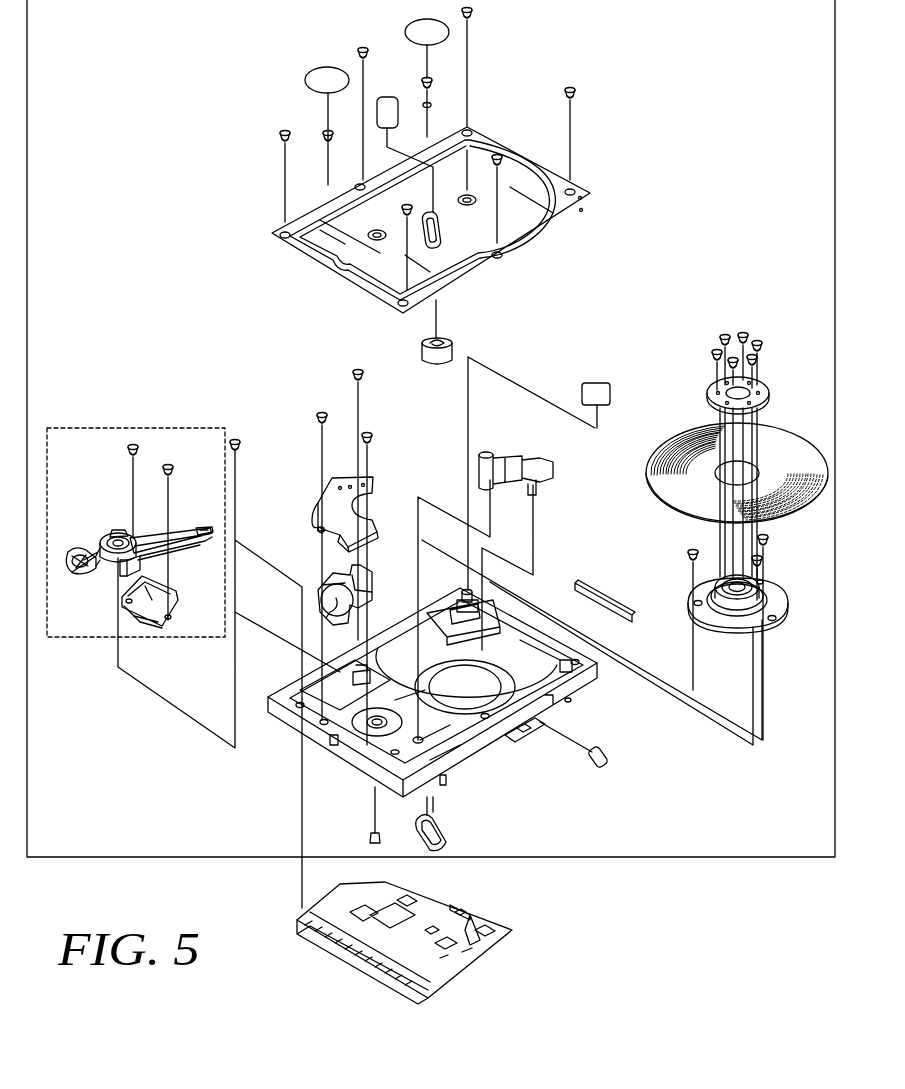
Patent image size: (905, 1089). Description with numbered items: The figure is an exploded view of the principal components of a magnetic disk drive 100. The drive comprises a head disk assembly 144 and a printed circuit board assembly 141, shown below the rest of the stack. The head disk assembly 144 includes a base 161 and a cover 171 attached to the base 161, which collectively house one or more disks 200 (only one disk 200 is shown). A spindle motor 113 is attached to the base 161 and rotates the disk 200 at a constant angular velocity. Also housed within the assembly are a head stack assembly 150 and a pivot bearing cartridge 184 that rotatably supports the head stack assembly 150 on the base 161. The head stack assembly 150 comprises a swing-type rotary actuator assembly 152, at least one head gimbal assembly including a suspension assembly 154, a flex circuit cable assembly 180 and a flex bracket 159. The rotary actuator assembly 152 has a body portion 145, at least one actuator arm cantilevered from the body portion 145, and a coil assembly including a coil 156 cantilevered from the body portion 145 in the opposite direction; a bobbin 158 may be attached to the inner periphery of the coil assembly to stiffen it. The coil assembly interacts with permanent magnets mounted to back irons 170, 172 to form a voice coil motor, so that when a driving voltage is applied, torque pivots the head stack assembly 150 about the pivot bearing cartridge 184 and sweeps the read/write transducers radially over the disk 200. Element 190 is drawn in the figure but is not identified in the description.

The magnetic disk drive 100 is at (687, 882).
The spindle motor 113 is at (682, 583).
The printed circuit board assembly 141 is at (460, 968).
The head disk assembly 144 is at (587, 858).
The body portion 145 is at (132, 533).
The head stack assembly 150 is at (143, 510).
The rotary actuator assembly 152 is at (146, 533).
The suspension assembly 154 is at (210, 528).
The coil 156 is at (72, 572).
The bobbin 158 is at (95, 556).
The flex bracket 159 is at (203, 609).
The base 161 is at (490, 763).
The back iron 170 is at (318, 510).
The cover 171 is at (557, 220).
The back iron 172 is at (375, 583).
The flex circuit cable assembly 180 is at (153, 563).
The pivot bearing cartridge 184 is at (108, 536).
The latch 190 is at (338, 603).
The disk 200 is at (672, 443).